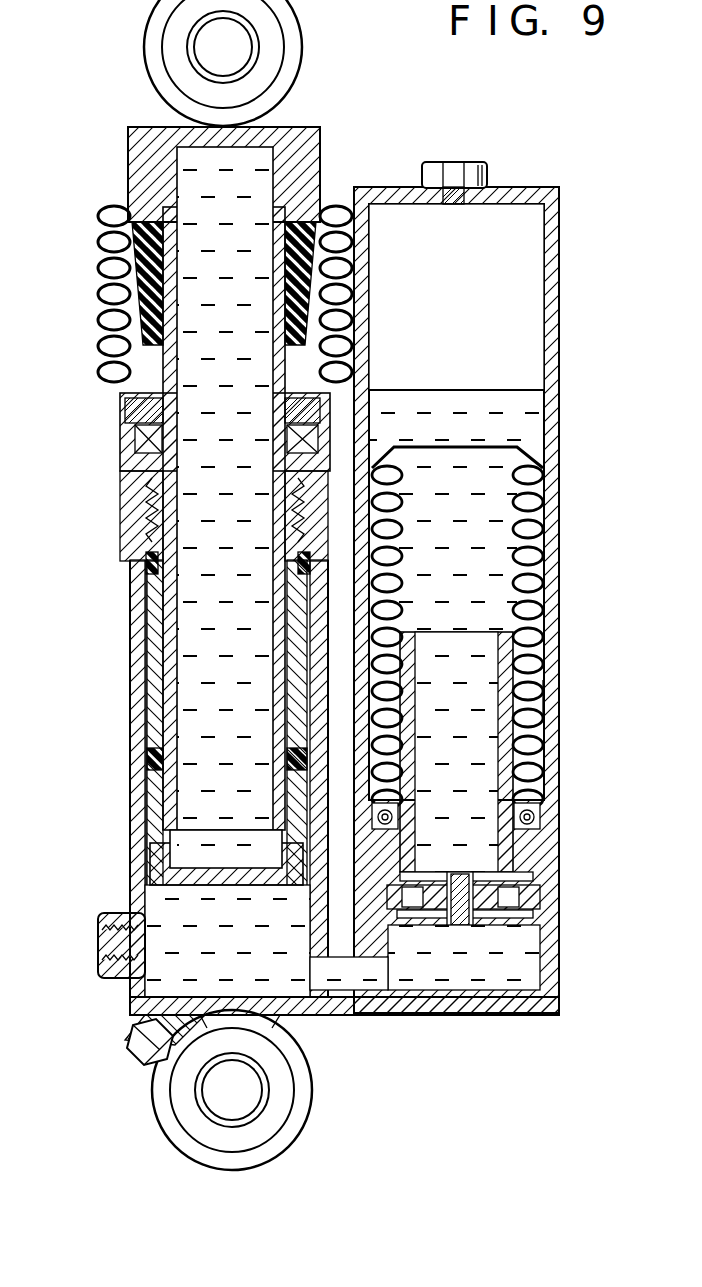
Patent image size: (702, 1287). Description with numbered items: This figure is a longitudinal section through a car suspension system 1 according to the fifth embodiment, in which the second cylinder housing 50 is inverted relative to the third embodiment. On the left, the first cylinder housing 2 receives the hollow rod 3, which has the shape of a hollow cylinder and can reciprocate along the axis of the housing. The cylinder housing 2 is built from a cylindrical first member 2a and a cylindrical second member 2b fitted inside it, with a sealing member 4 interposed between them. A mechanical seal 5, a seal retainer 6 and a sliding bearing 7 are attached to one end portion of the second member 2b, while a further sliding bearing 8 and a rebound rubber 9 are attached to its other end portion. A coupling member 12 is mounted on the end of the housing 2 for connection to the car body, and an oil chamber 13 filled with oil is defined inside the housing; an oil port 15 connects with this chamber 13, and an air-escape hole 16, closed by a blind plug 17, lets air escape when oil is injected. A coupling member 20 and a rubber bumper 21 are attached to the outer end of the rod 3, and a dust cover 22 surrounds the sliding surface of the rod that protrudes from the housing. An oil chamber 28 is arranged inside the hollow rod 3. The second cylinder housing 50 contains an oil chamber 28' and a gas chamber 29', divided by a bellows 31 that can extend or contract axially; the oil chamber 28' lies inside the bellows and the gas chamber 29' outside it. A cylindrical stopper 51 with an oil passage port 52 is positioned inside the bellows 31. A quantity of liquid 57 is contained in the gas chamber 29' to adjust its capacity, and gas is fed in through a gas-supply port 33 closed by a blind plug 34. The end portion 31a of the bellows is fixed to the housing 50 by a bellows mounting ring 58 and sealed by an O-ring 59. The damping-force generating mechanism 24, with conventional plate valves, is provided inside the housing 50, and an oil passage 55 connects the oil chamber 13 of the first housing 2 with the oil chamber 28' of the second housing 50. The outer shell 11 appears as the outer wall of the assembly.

The car suspension system 1 is at (530, 118).
The cylinder housing 2 is at (98, 660).
The first member 2a is at (130, 628).
The second member 2b is at (130, 600).
The hollow rod 3 is at (103, 360).
The sealing member 4 is at (145, 567).
The mechanical seal 5 is at (118, 446).
The seal retainer 6 is at (118, 413).
The sliding bearing 7 is at (130, 492).
The sliding bearing 8 is at (155, 733).
The rebound rubber 9 is at (150, 768).
The outer shell 11 is at (108, 796).
The coupling member 12 is at (150, 32).
The oil chamber 13 is at (160, 896).
The oil port 15 is at (100, 945).
The air-escape hole 16 is at (138, 1010).
The blind plug 17 is at (130, 1050).
The coupling member 20 is at (312, 1092).
The rubber bumper 21 is at (100, 293).
The dust cover 22 is at (100, 232).
The damping-force generating mechanism 24 is at (488, 940).
The oil chamber 28 is at (183, 507).
The oil chamber 28' is at (510, 540).
The gas chamber 29' is at (498, 297).
The bellows 31 is at (540, 575).
The end portion of bellows 31a is at (548, 835).
The gas-supply port 33 is at (466, 194).
The blind plug 34 is at (452, 163).
The second cylinder housing 50 is at (560, 300).
The cylindrical stopper 51 is at (540, 700).
The oil passage port 52 is at (465, 640).
The oil passage 55 is at (366, 980).
The liquid 57 is at (530, 415).
The bellows mounting ring 58 is at (548, 800).
The O-ring 59 is at (548, 815).